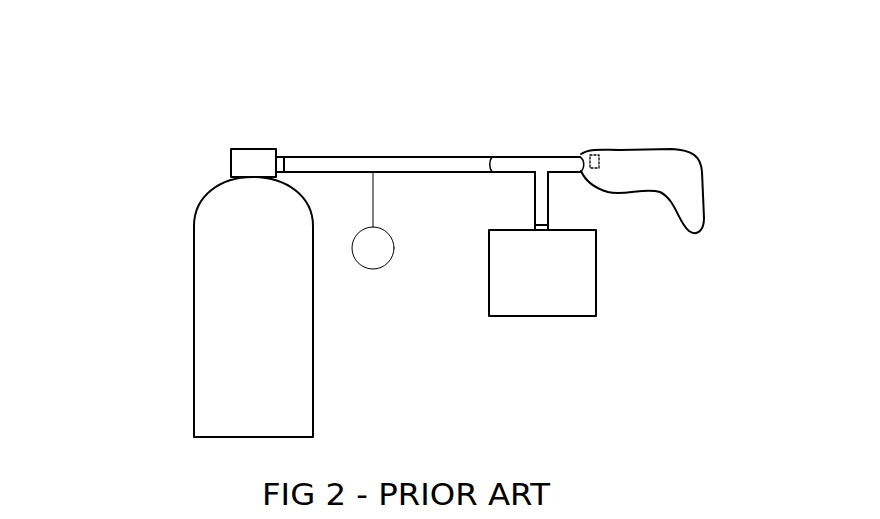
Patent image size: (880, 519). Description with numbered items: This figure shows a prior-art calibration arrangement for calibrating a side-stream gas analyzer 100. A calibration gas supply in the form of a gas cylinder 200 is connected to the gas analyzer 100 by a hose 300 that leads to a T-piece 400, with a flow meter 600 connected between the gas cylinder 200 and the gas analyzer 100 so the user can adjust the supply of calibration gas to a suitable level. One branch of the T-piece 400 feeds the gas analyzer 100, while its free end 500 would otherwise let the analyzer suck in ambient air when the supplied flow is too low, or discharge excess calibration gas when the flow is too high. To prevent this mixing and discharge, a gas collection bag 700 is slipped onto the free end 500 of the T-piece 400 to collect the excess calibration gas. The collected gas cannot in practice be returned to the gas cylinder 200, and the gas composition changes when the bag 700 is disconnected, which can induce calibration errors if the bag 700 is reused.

The side-stream gas analyzer 100 is at (583, 283).
The gas cylinder 200 is at (212, 320).
The hose 300 is at (432, 165).
The T-piece 400 is at (540, 165).
The free end of the T-piece 500 is at (598, 163).
The flow meter 600 is at (383, 265).
The gas collection bag 700 is at (680, 187).